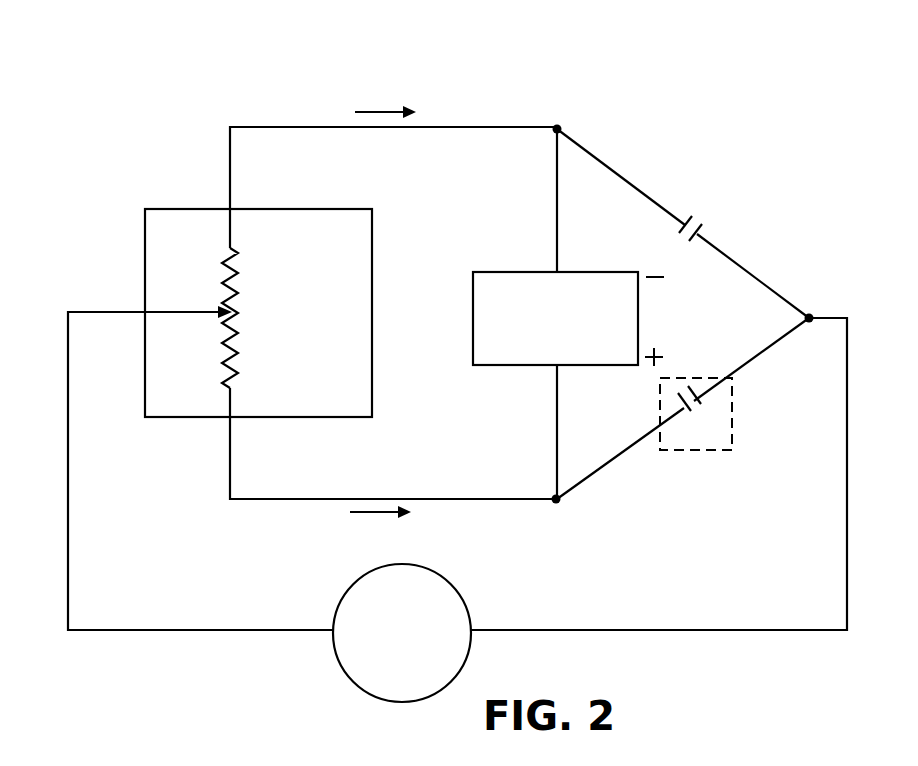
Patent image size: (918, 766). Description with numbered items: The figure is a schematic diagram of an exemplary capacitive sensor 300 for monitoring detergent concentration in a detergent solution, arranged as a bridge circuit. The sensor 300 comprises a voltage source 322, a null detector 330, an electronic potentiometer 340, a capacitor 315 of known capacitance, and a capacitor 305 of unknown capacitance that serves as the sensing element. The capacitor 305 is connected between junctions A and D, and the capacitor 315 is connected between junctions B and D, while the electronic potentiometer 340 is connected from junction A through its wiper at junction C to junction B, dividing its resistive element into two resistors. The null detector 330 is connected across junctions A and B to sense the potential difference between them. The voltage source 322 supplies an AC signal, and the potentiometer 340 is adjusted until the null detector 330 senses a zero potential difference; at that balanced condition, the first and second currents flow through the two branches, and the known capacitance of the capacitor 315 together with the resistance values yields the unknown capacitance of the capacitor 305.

The sensor 300 is at (205, 78).
The electronic potentiometer 340 is at (145, 237).
The null detector 330 is at (505, 272).
The capacitor 315 is at (689, 213).
The capacitor 305 is at (733, 415).
The voltage source 322 is at (360, 684).